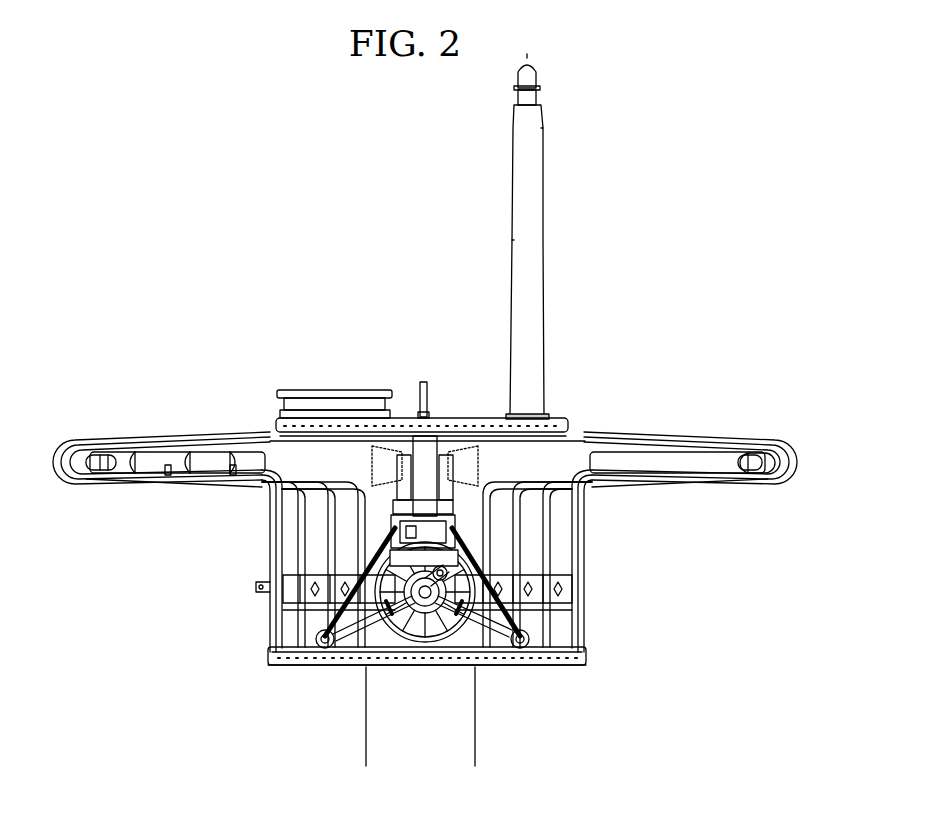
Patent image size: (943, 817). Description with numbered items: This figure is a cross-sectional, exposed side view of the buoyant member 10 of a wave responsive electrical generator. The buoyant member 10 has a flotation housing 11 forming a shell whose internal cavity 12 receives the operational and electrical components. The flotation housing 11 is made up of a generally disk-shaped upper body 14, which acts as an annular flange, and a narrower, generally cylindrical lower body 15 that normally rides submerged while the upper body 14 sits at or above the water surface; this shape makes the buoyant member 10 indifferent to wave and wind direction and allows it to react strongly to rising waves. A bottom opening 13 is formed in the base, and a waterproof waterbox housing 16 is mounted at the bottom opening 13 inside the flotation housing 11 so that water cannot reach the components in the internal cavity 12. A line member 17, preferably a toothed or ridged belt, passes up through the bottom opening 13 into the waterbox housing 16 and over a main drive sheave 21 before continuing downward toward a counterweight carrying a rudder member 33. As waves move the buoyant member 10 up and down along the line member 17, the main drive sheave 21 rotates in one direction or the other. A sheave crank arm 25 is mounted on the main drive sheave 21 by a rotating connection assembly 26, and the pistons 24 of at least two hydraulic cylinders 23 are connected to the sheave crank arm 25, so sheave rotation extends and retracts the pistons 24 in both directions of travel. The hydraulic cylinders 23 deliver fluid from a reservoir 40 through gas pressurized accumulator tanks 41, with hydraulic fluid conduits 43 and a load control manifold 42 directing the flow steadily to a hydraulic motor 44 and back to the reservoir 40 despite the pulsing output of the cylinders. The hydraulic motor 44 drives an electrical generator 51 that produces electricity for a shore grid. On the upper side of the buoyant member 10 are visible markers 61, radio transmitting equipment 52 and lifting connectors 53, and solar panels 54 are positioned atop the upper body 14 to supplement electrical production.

The buoyant member 10 is at (563, 416).
The flotation housing 11 is at (726, 437).
The internal cavity 12 is at (488, 458).
The bottom opening 13 is at (459, 666).
The upper body 14 is at (651, 490).
The lower body 15 is at (589, 600).
The waterbox housing 16 is at (369, 541).
The line member 17 is at (369, 740).
The main drive sheave 21 is at (431, 650).
The hydraulic cylinders 23 is at (347, 650).
The pistons 24 is at (408, 650).
The sheave crank arm 25 is at (463, 618).
The rotating connection assembly 26 is at (531, 604).
The rudder member 33 is at (113, 462).
The reservoir 40 is at (616, 457).
The accumulator tanks 41 is at (178, 455).
The load control manifold 42 is at (318, 649).
The hydraulic fluid conduits 43 is at (264, 436).
The hydraulic motor 44 is at (380, 532).
The electrical generator 51 is at (443, 462).
The radio transmitting equipment 52 is at (545, 228).
The lifting connectors 53 is at (417, 384).
The solar panels 54 is at (203, 437).
The visible markers 61 is at (545, 79).